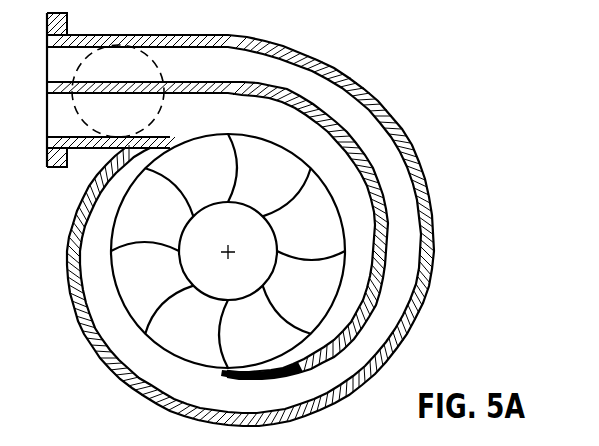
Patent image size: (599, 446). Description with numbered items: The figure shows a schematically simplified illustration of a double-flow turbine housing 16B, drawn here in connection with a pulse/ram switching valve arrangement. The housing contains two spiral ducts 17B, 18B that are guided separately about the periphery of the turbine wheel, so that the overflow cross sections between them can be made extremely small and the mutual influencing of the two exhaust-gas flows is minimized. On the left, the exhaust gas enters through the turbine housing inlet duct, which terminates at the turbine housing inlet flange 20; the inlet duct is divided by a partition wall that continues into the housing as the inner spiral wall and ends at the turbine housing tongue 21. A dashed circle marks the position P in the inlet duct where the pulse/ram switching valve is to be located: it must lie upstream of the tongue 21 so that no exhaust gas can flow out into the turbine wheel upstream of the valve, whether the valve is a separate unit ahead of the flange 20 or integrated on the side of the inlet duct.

The double-flow turbine housing 16B is at (286, 213).
The spiral duct 17B is at (375, 119).
The spiral duct 18B is at (362, 245).
The turbine housing inlet flange 20 is at (52, 168).
The turbine housing tongue 21 is at (163, 138).
The valve position P is at (160, 60).